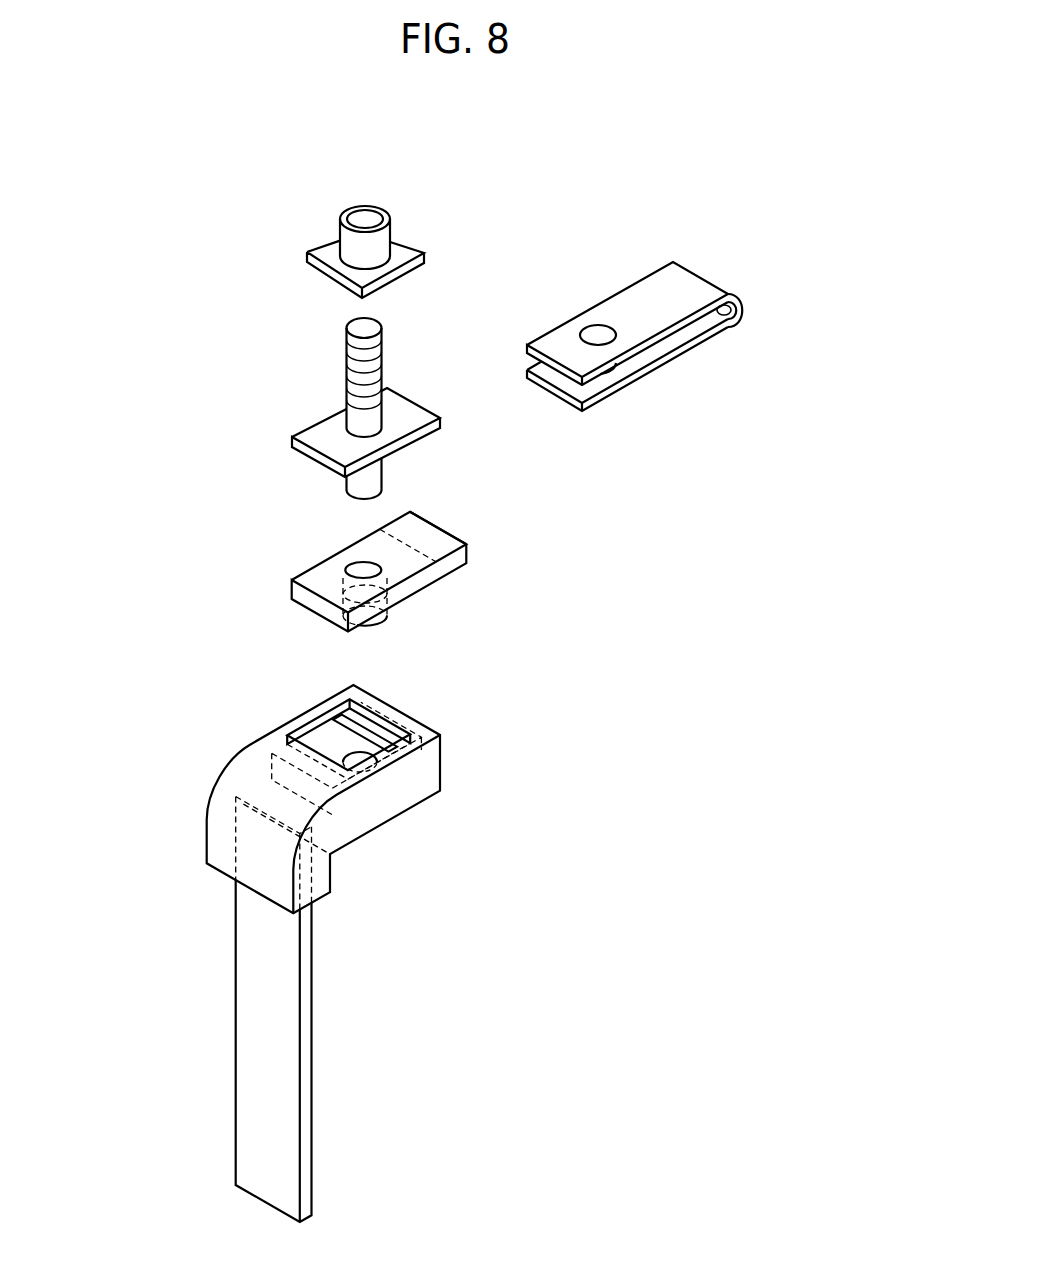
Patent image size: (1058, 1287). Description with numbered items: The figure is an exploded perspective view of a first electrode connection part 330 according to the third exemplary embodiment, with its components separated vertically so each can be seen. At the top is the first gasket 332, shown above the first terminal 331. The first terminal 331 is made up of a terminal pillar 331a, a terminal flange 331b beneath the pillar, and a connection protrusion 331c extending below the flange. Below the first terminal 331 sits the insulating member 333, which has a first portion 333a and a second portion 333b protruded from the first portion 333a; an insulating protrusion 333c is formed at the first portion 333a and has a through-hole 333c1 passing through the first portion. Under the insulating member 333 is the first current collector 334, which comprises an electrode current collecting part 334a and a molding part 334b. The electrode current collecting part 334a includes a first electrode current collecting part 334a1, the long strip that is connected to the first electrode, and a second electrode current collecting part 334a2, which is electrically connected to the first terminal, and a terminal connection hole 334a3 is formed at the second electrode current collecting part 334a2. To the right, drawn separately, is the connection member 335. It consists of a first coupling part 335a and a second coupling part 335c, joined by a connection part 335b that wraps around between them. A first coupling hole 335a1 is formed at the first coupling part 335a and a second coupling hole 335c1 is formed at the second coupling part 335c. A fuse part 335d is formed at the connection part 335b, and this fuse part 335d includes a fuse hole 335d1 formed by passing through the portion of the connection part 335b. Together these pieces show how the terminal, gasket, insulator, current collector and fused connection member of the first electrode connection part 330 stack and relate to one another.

The first electrode connection part 330 is at (500, 141).
The first terminal 331 is at (291, 410).
The terminal pillar 331a is at (358, 382).
The terminal flange 331b is at (323, 430).
The connection protrusion 331c is at (363, 487).
The first gasket 332 is at (323, 253).
The insulating member 333 is at (430, 595).
The first portion 333a is at (395, 572).
The second portion 333b is at (440, 538).
The insulating protrusion 333c is at (377, 618).
The through-hole 333c1 is at (358, 571).
The first current collector 334 is at (316, 936).
The electrode current collecting part 334a is at (316, 936).
The first electrode current collecting part 334a1 is at (255, 1093).
The second electrode current collecting part 334a2 is at (372, 742).
The terminal connection hole 334a3 is at (352, 752).
The molding part 334b is at (207, 848).
The connection member 335 is at (674, 397).
The first coupling part 335a is at (648, 295).
The first coupling hole 335a1 is at (595, 333).
The connection part 335b is at (738, 297).
The second coupling part 335c is at (670, 362).
The second coupling hole 335c1 is at (610, 373).
The fuse part 335d is at (733, 316).
The fuse hole 335d1 is at (723, 327).